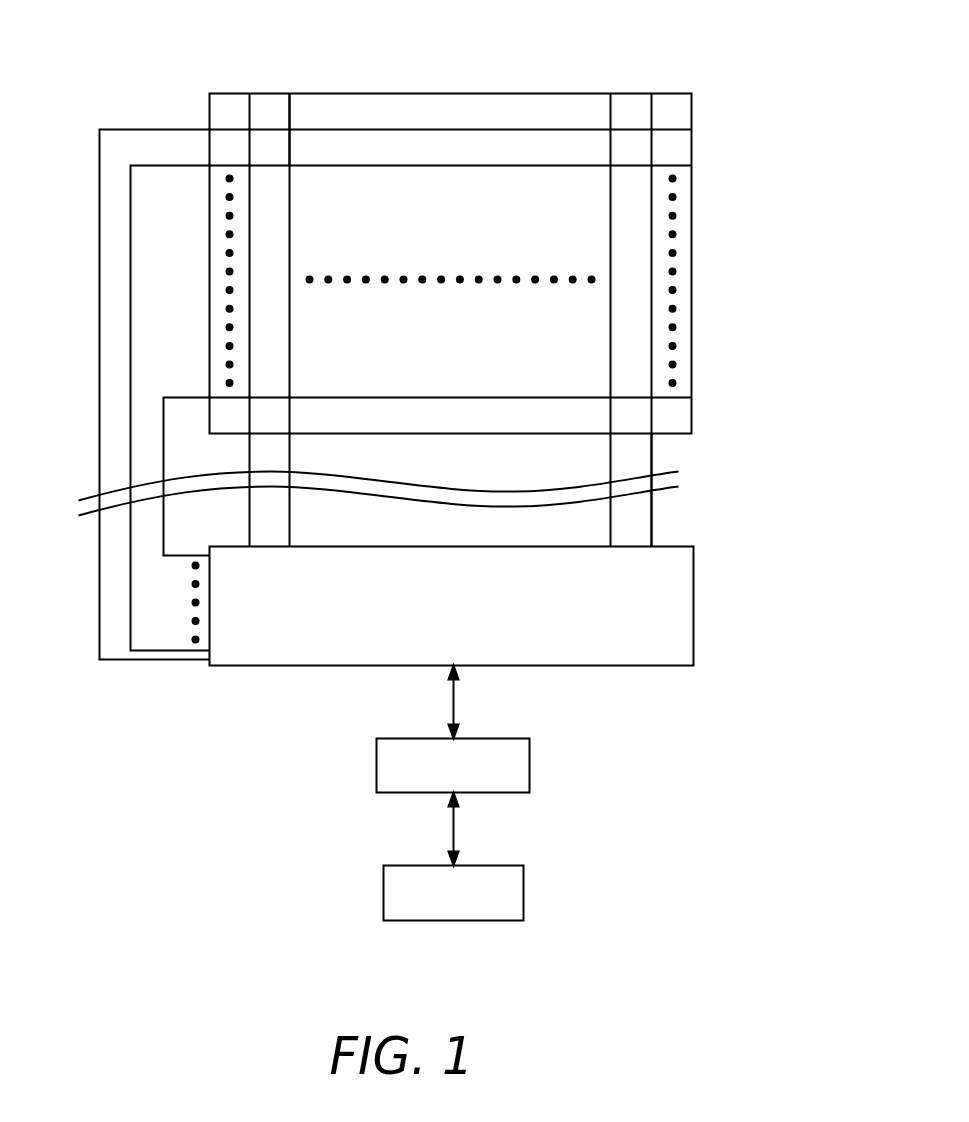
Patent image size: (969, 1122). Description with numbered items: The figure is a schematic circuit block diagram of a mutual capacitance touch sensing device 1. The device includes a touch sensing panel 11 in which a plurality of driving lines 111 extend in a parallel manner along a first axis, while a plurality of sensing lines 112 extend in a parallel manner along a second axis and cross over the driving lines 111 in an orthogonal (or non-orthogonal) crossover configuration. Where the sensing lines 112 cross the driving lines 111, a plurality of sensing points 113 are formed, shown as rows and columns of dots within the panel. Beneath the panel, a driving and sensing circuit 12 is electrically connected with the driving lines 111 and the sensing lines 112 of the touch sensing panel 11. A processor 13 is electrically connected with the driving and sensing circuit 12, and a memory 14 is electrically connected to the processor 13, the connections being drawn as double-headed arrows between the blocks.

The mutual capacitance touch sensing device 1 is at (668, 68).
The touch sensing panel 11 is at (683, 300).
The driving lines 111 is at (146, 126).
The sensing lines 112 is at (652, 516).
The sensing points 113 is at (288, 126).
The driving and sensing circuit 12 is at (693, 596).
The processor 13 is at (528, 758).
The memory 14 is at (522, 884).